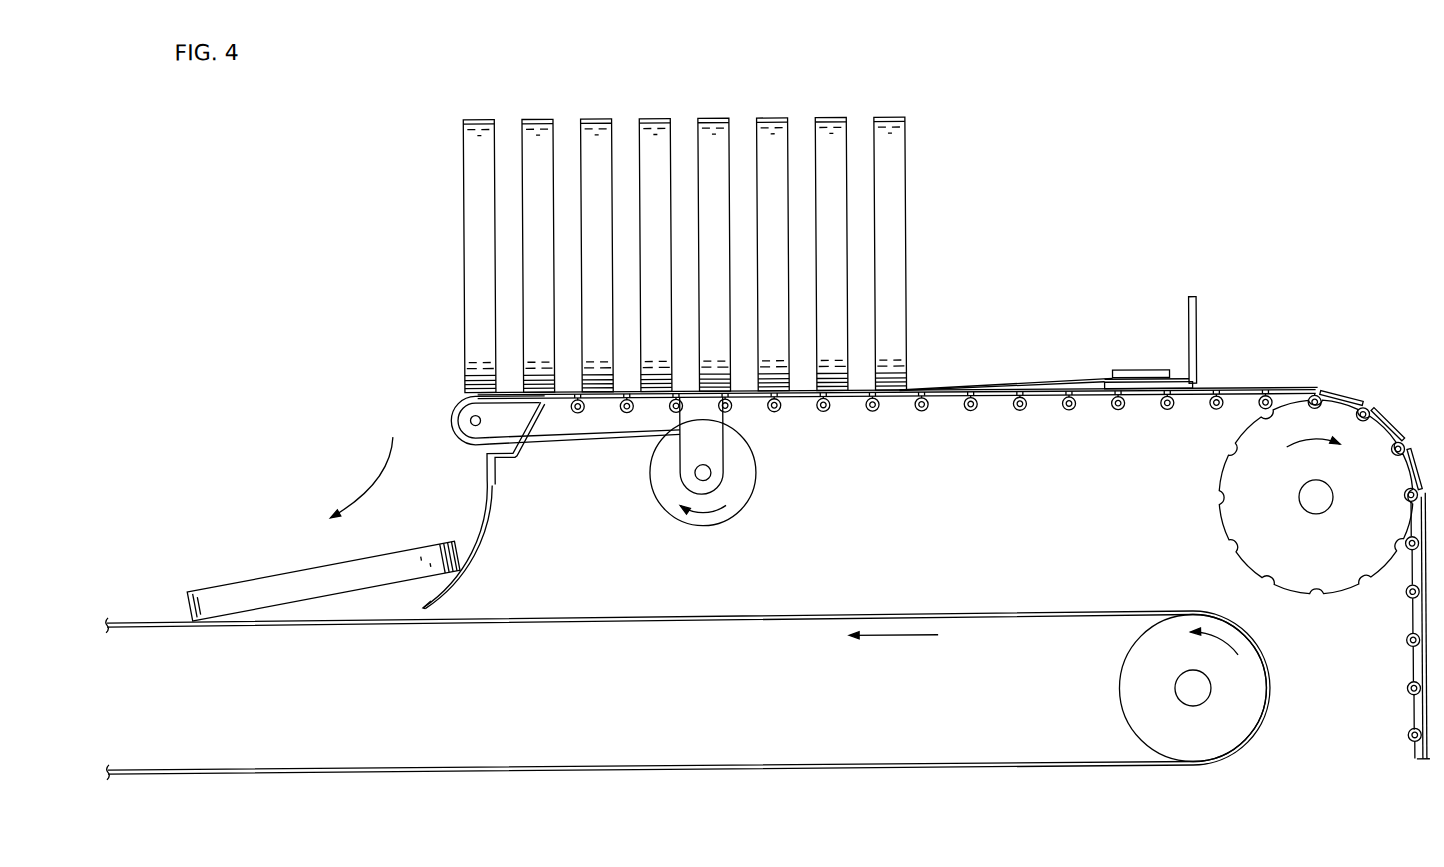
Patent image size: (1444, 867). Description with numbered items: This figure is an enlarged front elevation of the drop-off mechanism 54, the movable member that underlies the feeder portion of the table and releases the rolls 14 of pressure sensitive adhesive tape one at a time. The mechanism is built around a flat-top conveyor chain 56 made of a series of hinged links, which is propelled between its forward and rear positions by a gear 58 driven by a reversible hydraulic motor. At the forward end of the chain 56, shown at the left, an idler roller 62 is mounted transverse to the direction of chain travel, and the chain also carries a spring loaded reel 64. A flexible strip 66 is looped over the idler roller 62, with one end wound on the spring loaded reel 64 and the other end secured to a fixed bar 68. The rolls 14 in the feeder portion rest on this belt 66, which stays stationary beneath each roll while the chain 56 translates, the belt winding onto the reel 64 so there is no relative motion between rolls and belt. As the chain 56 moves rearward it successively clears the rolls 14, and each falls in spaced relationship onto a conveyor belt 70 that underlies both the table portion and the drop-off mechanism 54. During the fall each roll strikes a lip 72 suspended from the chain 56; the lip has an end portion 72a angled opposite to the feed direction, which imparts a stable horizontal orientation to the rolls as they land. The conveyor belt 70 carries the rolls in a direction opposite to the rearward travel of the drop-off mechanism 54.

The rolls 14 is at (484, 118).
The drop-off mechanism 54 is at (1263, 330).
The flat-top conveyor chain 56 is at (1242, 394).
The gear 58 is at (1331, 552).
The idler roller 62 is at (453, 410).
The spring loaded reel 64 is at (738, 486).
The flexible strip 66 is at (638, 440).
The fixed bar 68 is at (1137, 369).
The conveyor belt 70 is at (652, 616).
The lip 72 is at (488, 520).
The end portion 72a is at (433, 599).